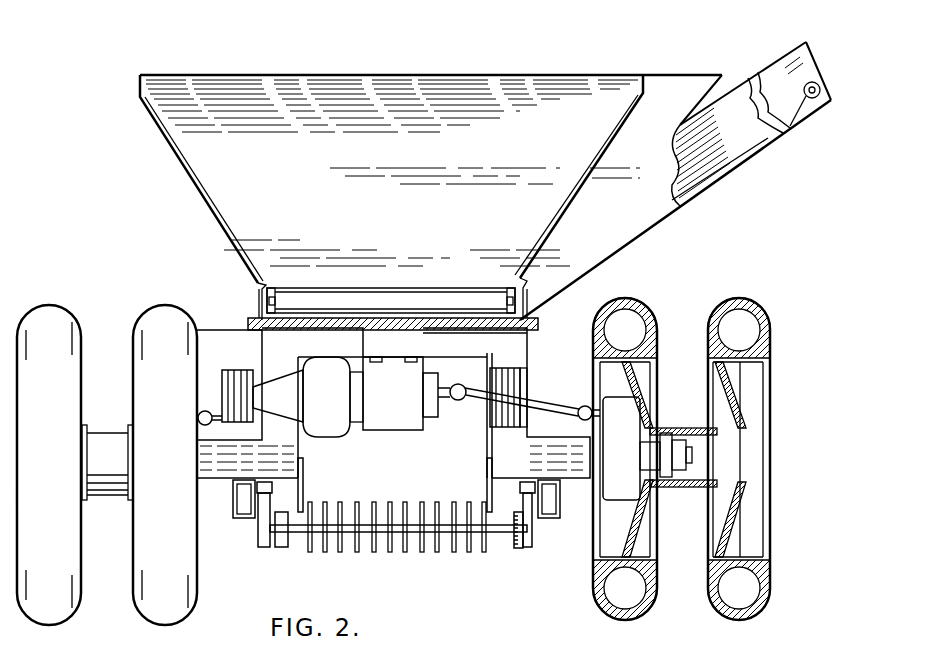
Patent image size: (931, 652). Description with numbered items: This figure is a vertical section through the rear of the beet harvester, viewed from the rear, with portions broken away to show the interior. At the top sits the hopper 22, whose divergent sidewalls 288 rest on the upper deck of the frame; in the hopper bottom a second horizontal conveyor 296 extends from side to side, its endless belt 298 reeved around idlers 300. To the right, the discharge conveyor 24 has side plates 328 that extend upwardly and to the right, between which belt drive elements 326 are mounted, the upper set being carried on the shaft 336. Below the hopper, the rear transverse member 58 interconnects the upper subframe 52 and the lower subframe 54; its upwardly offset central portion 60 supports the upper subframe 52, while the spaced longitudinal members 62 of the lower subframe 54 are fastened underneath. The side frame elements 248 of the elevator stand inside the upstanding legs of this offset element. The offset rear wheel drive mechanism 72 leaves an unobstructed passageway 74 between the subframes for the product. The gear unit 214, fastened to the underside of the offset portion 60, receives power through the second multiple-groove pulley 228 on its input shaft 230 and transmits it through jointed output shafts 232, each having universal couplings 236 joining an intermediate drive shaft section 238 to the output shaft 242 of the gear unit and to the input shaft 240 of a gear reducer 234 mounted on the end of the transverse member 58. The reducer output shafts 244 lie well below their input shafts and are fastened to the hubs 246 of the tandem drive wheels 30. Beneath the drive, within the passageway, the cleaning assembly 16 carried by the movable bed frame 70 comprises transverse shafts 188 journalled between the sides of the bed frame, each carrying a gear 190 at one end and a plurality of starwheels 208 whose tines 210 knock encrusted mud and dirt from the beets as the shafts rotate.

The hopper 22 is at (318, 58).
The discharge conveyor 24 is at (757, 58).
The side plates 328 is at (818, 30).
The belt drive elements 326 is at (790, 130).
The shaft 336 is at (800, 112).
The sidewall 288 is at (233, 218).
The second horizontal conveyor 296 is at (448, 283).
The endless belt 298 is at (360, 290).
The idlers 300 is at (270, 292).
The upper subframe 52 is at (257, 308).
The second multiple-groove pulley 228 is at (240, 370).
The universal couplings 236 is at (207, 410).
The gear unit input shaft 230 is at (258, 390).
The rear transverse member 58 is at (300, 442).
The gear unit 214 is at (402, 420).
The output shaft 242 is at (432, 394).
The unobstructed passageway 74 is at (455, 451).
The upwardly offset central portion 60 is at (460, 348).
The jointed output shafts 232 is at (532, 405).
The intermediate drive shaft section 238 is at (579, 419).
The input shaft 240 is at (603, 412).
The hubs 246 is at (97, 445).
The output shafts 244 is at (692, 455).
The gear reducers 234 is at (625, 470).
The cleaning assembly 16 is at (395, 497).
The transverse shafts 188 is at (371, 550).
The tines 210 is at (342, 550).
The starwheels 208 is at (433, 552).
The gear 190 is at (518, 550).
The rear wheel drive mechanism 72 is at (372, 444).
The side frame elements 248 is at (303, 499).
The longitudinal members 62 is at (234, 514).
The lower subframe 54 is at (253, 527).
The bed frame 70 is at (263, 545).
The tandem drive wheels 30 is at (160, 626).